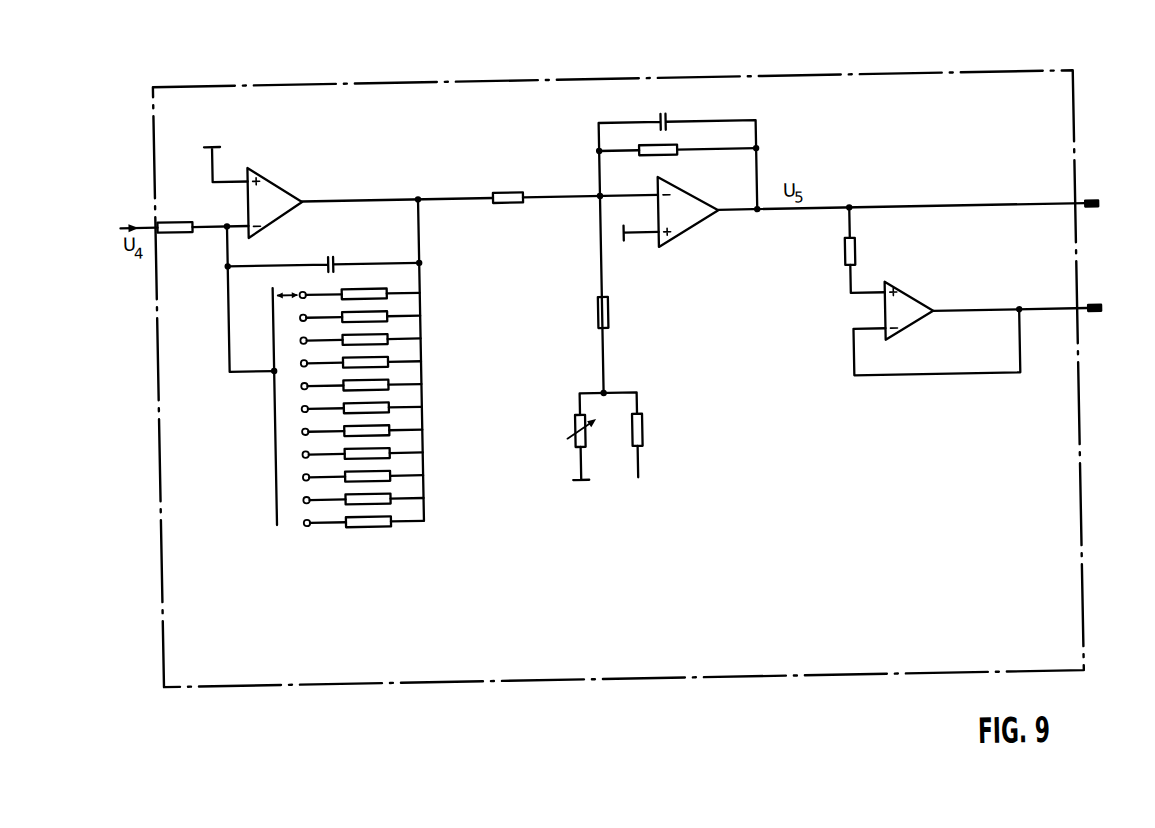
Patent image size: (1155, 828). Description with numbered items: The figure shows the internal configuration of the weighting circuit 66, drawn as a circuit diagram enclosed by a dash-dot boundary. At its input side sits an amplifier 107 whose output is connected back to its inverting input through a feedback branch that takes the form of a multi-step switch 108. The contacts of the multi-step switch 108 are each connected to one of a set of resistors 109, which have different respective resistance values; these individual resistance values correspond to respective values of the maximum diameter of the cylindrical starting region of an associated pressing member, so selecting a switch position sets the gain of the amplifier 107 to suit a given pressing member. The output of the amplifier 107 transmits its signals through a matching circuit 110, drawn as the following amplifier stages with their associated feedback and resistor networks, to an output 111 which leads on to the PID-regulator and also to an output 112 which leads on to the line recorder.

The weighting circuit 66 is at (1078, 557).
The amplifier 107 is at (280, 177).
The multi-step switch 108 is at (267, 458).
The resistors 109 is at (390, 310).
The matching circuit 110 is at (835, 158).
The output 111 is at (1097, 209).
The output 112 is at (1096, 316).